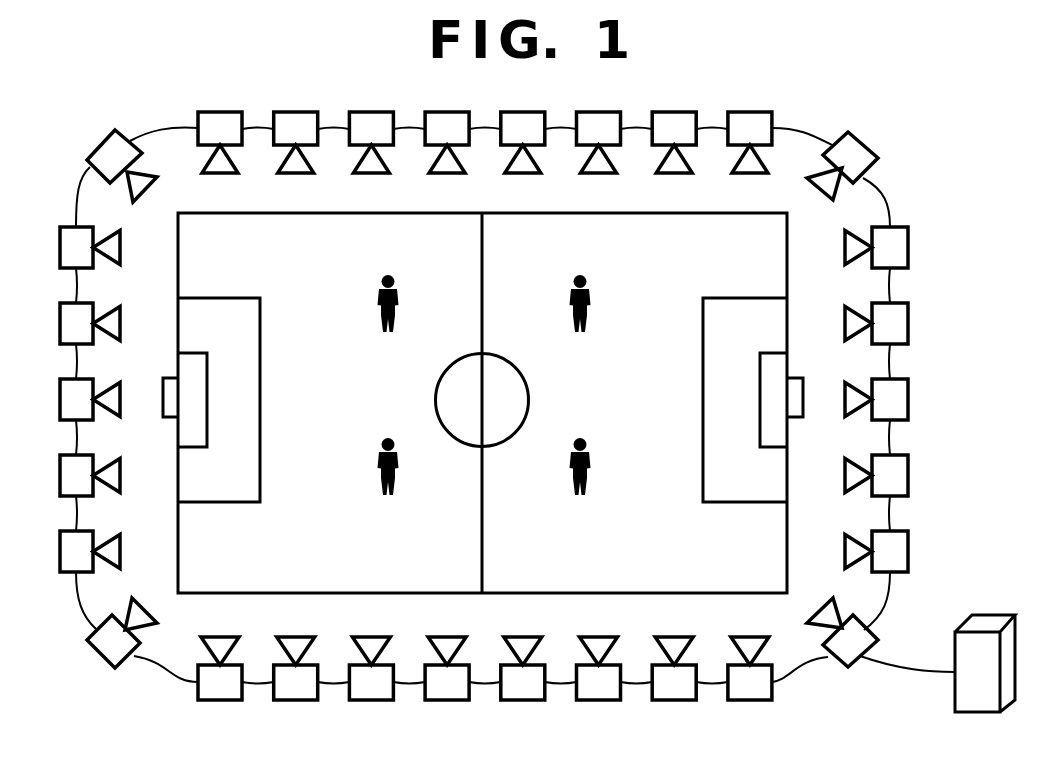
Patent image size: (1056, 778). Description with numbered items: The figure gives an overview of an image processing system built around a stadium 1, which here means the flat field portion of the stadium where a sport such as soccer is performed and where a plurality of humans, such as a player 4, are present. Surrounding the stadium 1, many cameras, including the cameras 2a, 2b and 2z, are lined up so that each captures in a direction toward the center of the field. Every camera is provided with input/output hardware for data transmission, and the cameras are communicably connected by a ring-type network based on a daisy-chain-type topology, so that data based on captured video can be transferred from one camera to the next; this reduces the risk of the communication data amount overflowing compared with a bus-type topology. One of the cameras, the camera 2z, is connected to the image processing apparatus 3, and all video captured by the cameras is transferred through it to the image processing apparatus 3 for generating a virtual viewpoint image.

The stadium 1 is at (180, 594).
The camera 2a is at (447, 700).
The camera 2b is at (523, 700).
The camera 2z is at (848, 667).
The image processing apparatus 3 is at (990, 615).
The player 4 is at (388, 497).